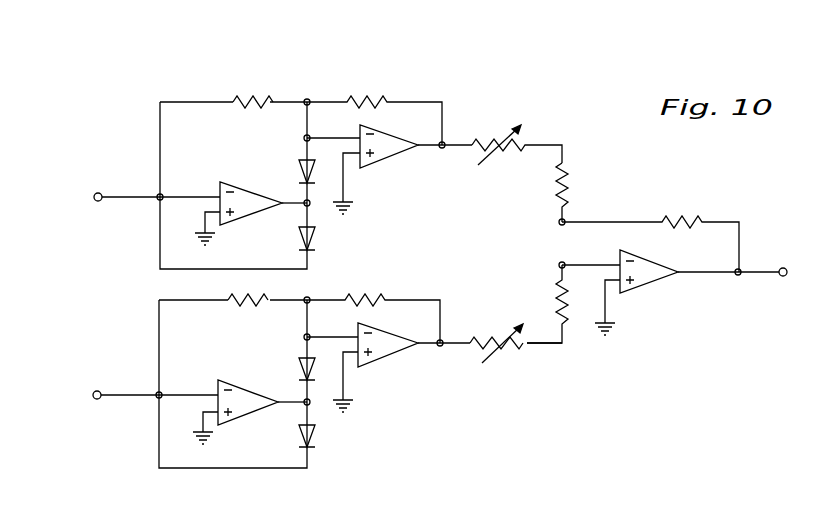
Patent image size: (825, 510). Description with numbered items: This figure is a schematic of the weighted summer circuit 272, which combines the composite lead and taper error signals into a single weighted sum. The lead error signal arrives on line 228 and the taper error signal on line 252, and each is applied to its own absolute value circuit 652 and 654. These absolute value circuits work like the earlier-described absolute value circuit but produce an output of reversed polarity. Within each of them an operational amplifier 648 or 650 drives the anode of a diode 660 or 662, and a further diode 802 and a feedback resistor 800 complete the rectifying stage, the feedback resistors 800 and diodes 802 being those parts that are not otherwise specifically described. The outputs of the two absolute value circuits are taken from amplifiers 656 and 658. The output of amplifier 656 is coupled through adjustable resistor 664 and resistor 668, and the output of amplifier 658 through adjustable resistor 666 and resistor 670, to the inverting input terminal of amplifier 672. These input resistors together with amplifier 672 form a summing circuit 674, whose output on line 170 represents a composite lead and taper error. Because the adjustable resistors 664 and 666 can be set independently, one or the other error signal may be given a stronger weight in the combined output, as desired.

The line 170 is at (757, 270).
The line 228 is at (131, 195).
The line 252 is at (130, 393).
The weighted summer circuit 272 is at (556, 380).
The amplifier 648 is at (257, 213).
The amplifier 650 is at (258, 413).
The absolute value circuit 652 is at (212, 166).
The absolute value circuit 654 is at (205, 368).
The amplifier 656 is at (389, 164).
The amplifier 658 is at (387, 364).
The diode 660 is at (300, 171).
The diode 662 is at (298, 370).
The adjustable resistor 664 is at (522, 128).
The adjustable resistor 666 is at (513, 350).
The resistor 668 is at (568, 185).
The resistor 670 is at (557, 293).
The amplifier 672 is at (657, 263).
The summing circuit 674 is at (662, 289).
The feedback resistor 800 is at (236, 100).
The diode 802 is at (317, 242).